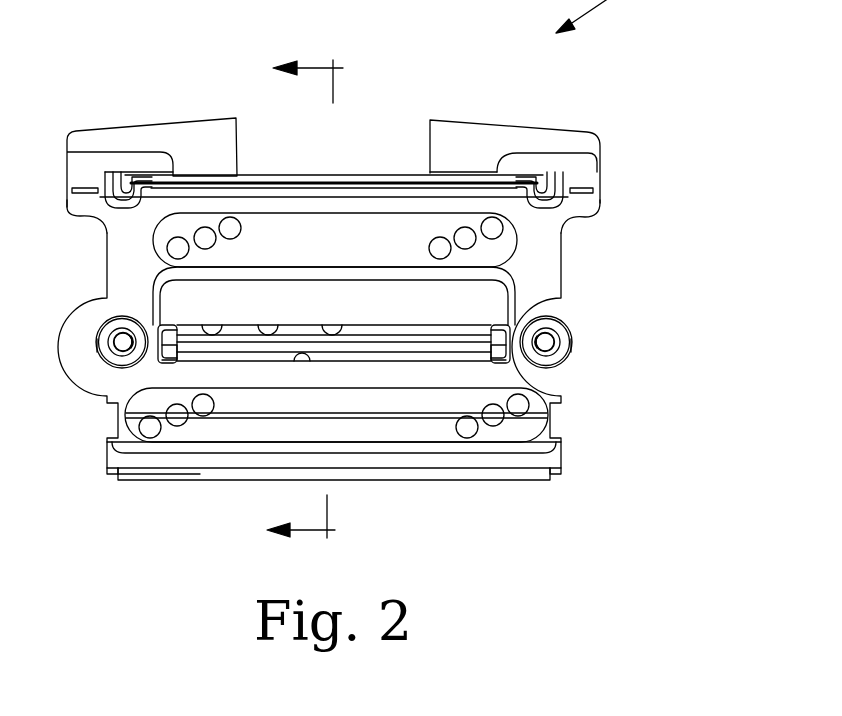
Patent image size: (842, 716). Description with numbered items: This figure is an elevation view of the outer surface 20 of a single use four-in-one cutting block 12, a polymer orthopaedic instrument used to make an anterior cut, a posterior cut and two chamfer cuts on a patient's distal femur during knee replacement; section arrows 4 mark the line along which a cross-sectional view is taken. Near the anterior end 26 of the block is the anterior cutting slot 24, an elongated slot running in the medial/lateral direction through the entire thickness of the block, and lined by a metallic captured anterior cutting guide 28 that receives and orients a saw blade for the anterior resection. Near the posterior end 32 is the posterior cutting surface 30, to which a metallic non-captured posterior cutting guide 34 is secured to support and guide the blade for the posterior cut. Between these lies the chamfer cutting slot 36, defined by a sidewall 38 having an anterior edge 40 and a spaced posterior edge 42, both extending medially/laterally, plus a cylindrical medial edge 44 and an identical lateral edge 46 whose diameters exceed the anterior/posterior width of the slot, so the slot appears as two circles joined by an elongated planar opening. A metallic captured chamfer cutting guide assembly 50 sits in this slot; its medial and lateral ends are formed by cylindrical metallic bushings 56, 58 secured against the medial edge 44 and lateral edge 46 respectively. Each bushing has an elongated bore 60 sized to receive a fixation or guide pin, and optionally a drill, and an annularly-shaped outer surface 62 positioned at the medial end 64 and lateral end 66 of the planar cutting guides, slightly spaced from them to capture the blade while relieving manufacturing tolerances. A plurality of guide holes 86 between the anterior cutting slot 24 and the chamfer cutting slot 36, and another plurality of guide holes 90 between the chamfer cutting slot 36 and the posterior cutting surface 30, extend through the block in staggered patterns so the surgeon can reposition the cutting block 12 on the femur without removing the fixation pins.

The section line 4- 4 is at (310, 299).
The 4-in-1 cutting block 12 is at (497, 128).
The outer surface 20 is at (557, 258).
The anterior cutting slot 24 is at (80, 216).
The anterior end 26 is at (557, 134).
The anterior cutting guide 28 is at (144, 174).
The posterior cutting surface 30 is at (483, 470).
The posterior end 32 is at (562, 456).
The posterior cutting guide 34 is at (143, 474).
The chamfer cutting slot 36 is at (222, 324).
The sidewall 38 is at (339, 324).
The anterior edge 40 is at (278, 324).
The posterior edge 42 is at (303, 362).
The medial edge 44 is at (101, 354).
The lateral edge 46 is at (569, 354).
The chamfer cutting guide assembly 50 is at (389, 334).
The metallic bushing 56 is at (102, 333).
The metallic bushing 58 is at (568, 333).
The elongated bore 60 is at (114, 356).
The outer surface 62 is at (156, 330).
The medial end 64 is at (166, 362).
The lateral end 66 is at (505, 362).
The guide holes 86 is at (168, 250).
The guide holes 90 is at (129, 426).